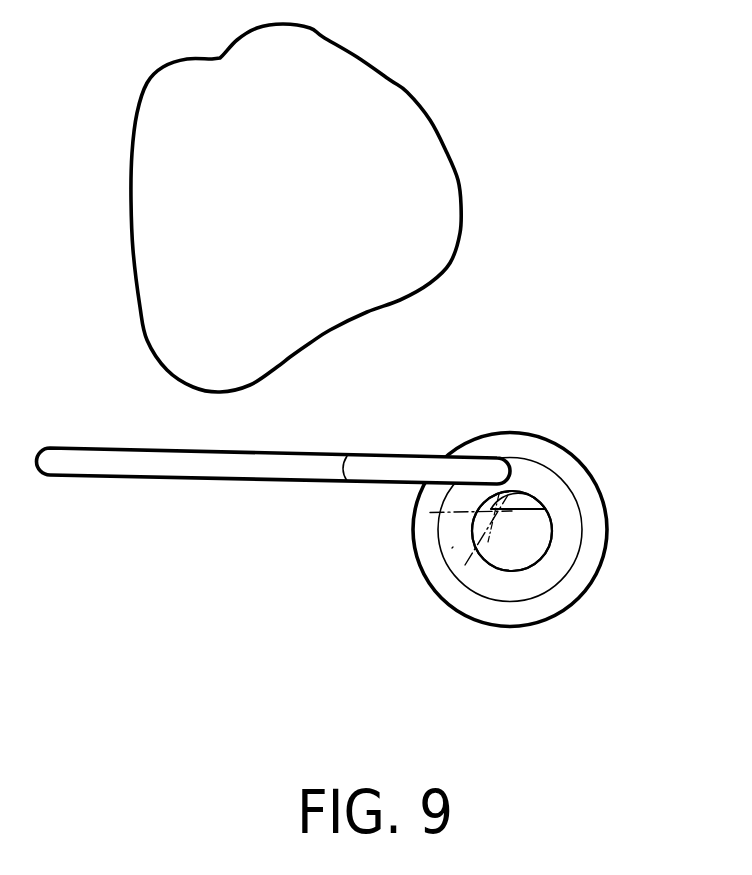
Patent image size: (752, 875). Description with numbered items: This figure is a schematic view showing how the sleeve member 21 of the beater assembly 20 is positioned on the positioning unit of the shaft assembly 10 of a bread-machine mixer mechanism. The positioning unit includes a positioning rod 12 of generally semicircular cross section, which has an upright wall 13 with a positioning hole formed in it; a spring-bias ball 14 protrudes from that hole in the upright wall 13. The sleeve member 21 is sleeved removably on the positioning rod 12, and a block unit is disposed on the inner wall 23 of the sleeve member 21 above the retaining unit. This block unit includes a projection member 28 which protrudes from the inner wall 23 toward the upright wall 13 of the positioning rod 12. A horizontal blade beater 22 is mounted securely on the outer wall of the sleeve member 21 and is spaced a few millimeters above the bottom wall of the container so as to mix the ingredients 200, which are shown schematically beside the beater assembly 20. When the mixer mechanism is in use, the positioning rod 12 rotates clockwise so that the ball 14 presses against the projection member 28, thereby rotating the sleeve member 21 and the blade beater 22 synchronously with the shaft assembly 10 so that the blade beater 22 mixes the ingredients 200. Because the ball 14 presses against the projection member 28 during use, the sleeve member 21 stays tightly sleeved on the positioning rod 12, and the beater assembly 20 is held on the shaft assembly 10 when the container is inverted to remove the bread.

The ingredients 200 is at (407, 92).
The beater assembly 20 is at (528, 433).
The sleeve member 21 is at (577, 505).
The blade beater 22 is at (428, 458).
The inner wall 23 is at (553, 530).
The projection member 28 is at (530, 507).
The spring-bias ball 14 is at (430, 512).
The upright wall 13 is at (452, 548).
The positioning rod 12 is at (465, 565).
The shaft assembly 10 is at (509, 562).